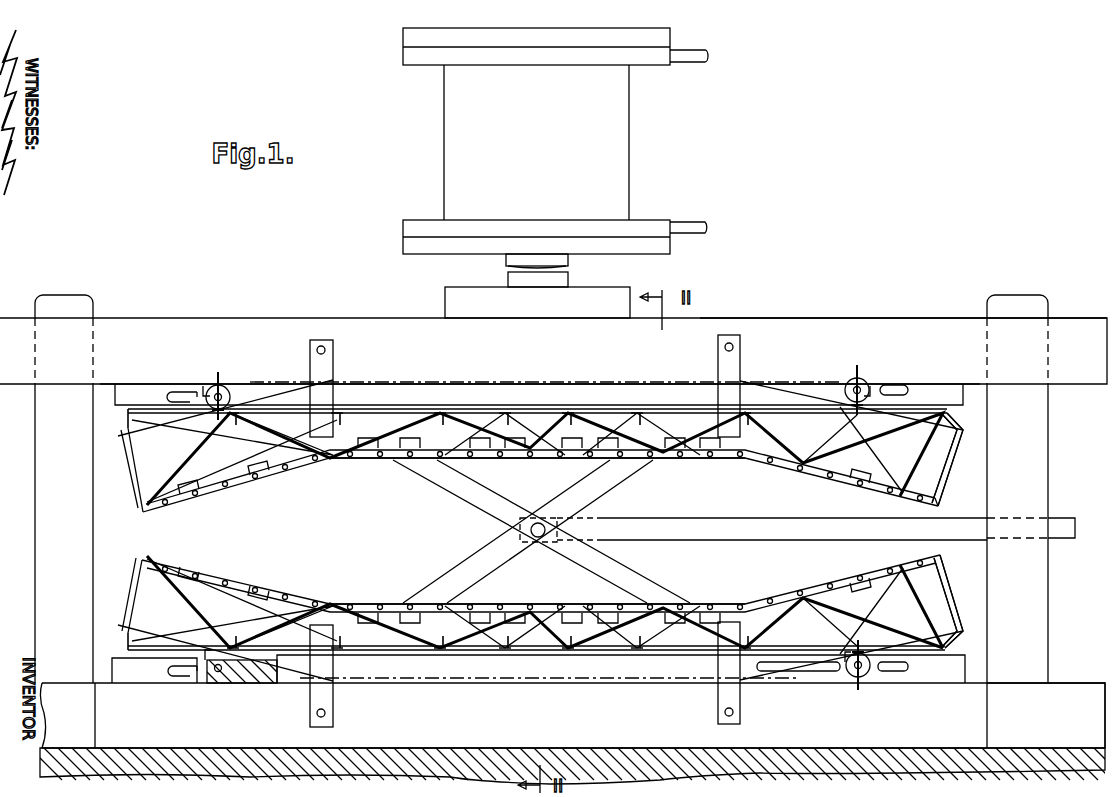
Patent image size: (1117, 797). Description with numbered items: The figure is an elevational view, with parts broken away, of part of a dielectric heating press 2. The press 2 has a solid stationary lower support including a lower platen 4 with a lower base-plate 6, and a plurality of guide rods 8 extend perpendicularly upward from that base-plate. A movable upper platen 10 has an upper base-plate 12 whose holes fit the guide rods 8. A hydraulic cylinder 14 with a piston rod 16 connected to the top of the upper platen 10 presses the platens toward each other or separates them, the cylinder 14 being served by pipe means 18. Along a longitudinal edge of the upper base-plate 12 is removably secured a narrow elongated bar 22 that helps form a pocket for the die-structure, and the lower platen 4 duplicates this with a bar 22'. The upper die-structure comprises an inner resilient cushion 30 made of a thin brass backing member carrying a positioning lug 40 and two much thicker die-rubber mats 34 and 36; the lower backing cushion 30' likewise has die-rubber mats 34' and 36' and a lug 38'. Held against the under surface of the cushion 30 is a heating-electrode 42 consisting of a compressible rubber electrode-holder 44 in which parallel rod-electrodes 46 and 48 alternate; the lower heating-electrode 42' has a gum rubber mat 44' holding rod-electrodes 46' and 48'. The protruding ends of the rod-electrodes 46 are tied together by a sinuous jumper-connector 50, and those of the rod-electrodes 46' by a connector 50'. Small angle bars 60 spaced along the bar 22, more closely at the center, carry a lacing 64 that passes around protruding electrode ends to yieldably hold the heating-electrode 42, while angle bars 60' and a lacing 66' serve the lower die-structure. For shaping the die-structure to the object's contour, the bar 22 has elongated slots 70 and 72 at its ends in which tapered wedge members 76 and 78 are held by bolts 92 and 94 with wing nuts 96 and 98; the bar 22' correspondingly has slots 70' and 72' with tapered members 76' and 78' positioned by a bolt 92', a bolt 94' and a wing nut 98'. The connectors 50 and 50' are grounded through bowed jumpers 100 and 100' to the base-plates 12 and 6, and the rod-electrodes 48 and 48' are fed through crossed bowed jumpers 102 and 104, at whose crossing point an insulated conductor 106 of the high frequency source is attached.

The press 2 is at (319, 288).
The lower platen 4 is at (533, 714).
The lower base-plate 6 is at (1060, 688).
The guide rods 8 is at (36, 487).
The upper platen 10 is at (522, 356).
The upper base-plate 12 is at (812, 320).
The hydraulic cylinder 14 is at (629, 143).
The piston rod 16 is at (568, 280).
The pipe means 18 is at (690, 62).
The bar 22 is at (539, 383).
The bar 22' is at (538, 680).
The inner resilient cushion 30 is at (529, 460).
The backing cushion 30' is at (539, 602).
The die-rubber mat 34 is at (960, 459).
The die-rubber mat 34' is at (962, 601).
The die-rubber mat 36 is at (958, 490).
The die-rubber mat 36' is at (958, 603).
The lug 38' is at (550, 691).
The positioning lug 40 is at (574, 383).
The heating-electrode 42 is at (537, 469).
The heating-electrode 42' is at (537, 591).
The electrode-holder 44 is at (540, 481).
The gum rubber mat 44' is at (561, 577).
The rod-electrodes 46 is at (544, 459).
The rod-electrodes 46' is at (545, 593).
The rod-electrodes 48 is at (540, 444).
The rod-electrodes 48' is at (540, 617).
The jumper-connector 50 is at (544, 458).
The connector 50' is at (524, 604).
The angle bars 60 is at (489, 405).
The angle bars 60' is at (489, 656).
The lacing 64 is at (952, 460).
The lacing 66' is at (921, 606).
The elongated slot 70 is at (175, 382).
The slot 70' is at (177, 686).
The elongated slot 72 is at (901, 375).
The slot 72' is at (832, 684).
The tapered member 76 is at (198, 375).
The tapered member 76' is at (238, 678).
The tapered member 78 is at (878, 376).
The tapered member 78' is at (871, 679).
The bolt 92 is at (236, 383).
The pivot bearing 92' is at (242, 690).
The bolt 94 is at (843, 378).
The pivot bearing 94' is at (849, 688).
The wing nut 96 is at (220, 375).
The wing nut 98 is at (853, 375).
The wing nut 98' is at (867, 682).
The bowed jumper 100 is at (525, 386).
The bowed jumper 100' is at (547, 674).
The crossed jumper 102 is at (481, 506).
The crossed jumper 104 is at (624, 492).
The insulated conductor 106 is at (685, 520).